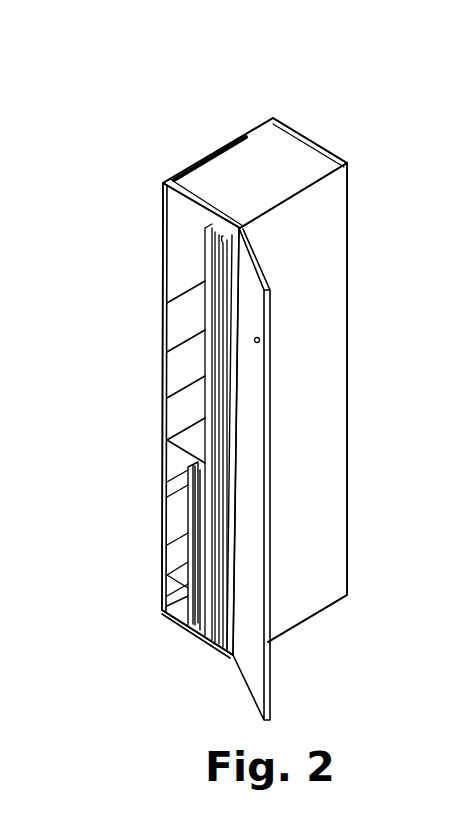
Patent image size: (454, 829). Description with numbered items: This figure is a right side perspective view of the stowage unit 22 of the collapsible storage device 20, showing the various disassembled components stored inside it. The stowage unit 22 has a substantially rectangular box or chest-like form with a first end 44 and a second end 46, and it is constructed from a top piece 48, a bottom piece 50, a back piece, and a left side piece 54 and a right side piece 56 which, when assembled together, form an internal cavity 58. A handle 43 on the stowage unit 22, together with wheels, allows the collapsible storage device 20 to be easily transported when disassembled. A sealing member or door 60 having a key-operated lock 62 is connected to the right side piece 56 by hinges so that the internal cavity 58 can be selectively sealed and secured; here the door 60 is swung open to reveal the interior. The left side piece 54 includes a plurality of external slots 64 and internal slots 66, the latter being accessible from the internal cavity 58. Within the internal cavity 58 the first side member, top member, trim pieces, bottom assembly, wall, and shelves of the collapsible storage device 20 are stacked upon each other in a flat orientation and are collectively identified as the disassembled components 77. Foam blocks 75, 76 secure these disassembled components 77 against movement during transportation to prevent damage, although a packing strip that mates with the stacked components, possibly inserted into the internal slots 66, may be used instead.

The collapsible storage device 20 is at (165, 147).
The stowage unit 22 is at (348, 353).
The handle 43 is at (218, 147).
The first end 44 is at (307, 137).
The second end 46 is at (158, 602).
The top piece 48 is at (273, 143).
The bottom piece 50 is at (173, 623).
The left side piece 54 is at (162, 220).
The right side piece 56 is at (333, 243).
The internal cavity 58 is at (177, 532).
The door 60 is at (268, 670).
The lock 62 is at (258, 336).
The external slots 64 is at (162, 453).
The internal slots 66 is at (180, 383).
The foam block 75 is at (177, 462).
The foam block 76 is at (172, 587).
The disassembled components 77 is at (213, 650).